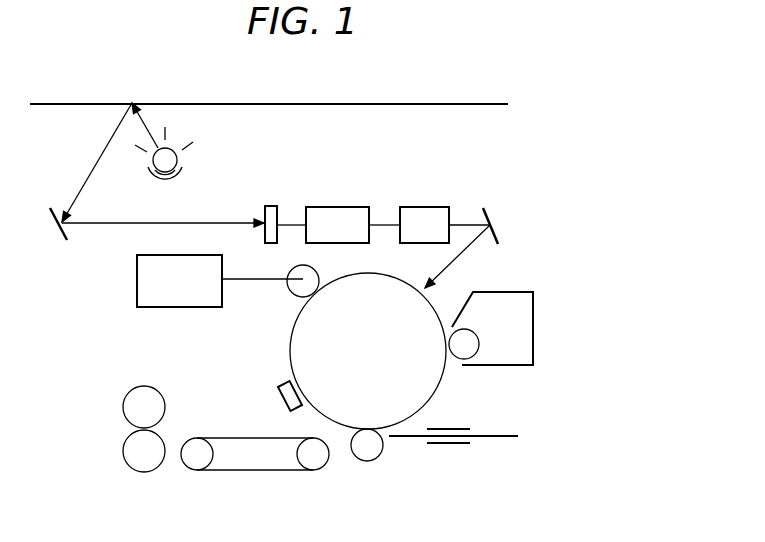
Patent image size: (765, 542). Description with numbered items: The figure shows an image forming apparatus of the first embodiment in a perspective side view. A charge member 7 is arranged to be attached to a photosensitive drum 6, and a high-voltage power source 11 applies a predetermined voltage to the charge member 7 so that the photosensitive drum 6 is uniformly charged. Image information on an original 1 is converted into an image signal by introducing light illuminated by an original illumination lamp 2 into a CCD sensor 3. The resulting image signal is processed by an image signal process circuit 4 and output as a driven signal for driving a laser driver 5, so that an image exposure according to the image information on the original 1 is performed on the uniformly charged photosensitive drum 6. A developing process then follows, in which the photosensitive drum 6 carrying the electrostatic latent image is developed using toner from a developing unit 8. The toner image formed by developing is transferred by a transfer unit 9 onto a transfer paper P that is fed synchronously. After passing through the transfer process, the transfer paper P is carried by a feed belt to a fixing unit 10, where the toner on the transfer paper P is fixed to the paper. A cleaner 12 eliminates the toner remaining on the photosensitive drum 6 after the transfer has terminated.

The original 1 is at (478, 104).
The original illumination lamp 2 is at (178, 160).
The CCD sensor 3 is at (272, 205).
The image signal process circuit 4 is at (352, 206).
The laser driver 5 is at (436, 206).
The photosensitive drum 6 is at (443, 385).
The charge member 7 is at (294, 296).
The developing unit 8 is at (533, 325).
The transfer unit 9 is at (380, 458).
The fixing unit 10 is at (122, 447).
The high-voltage power source 11 is at (137, 273).
The cleaner 12 is at (276, 393).
The transfer paper P is at (512, 438).